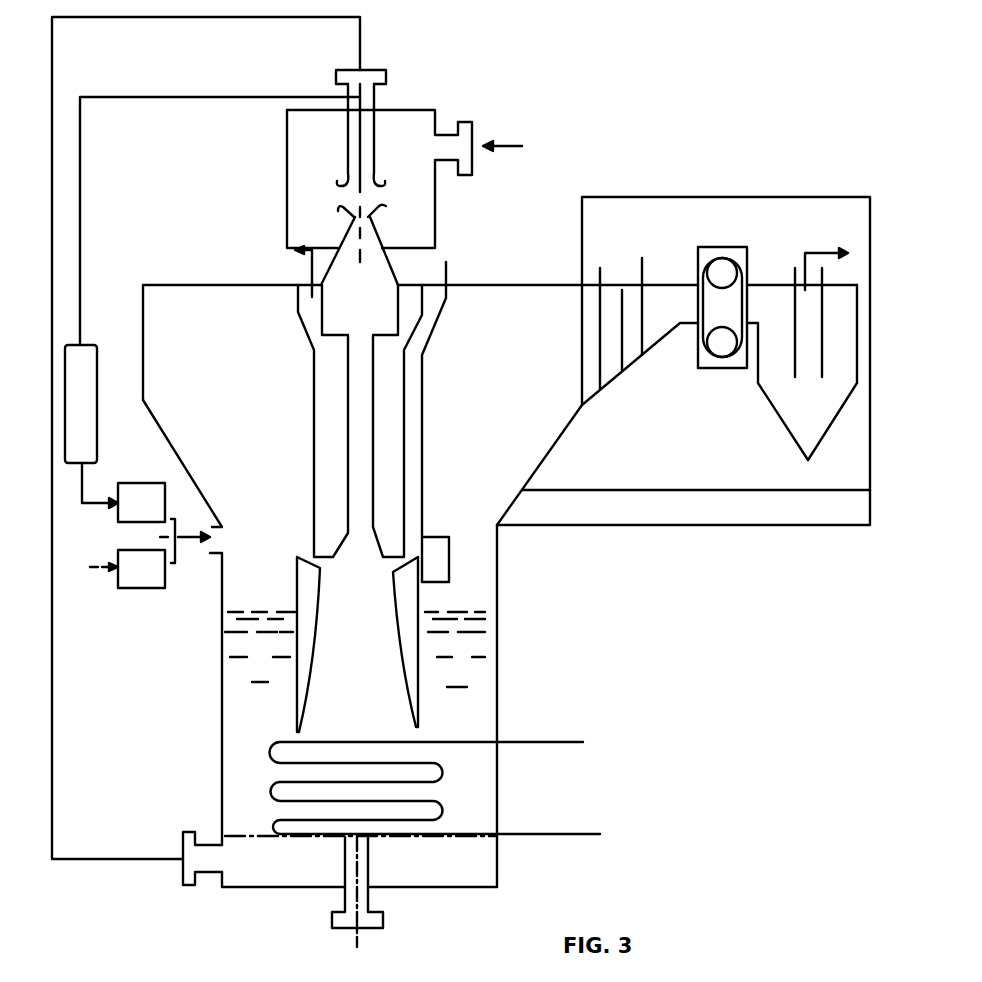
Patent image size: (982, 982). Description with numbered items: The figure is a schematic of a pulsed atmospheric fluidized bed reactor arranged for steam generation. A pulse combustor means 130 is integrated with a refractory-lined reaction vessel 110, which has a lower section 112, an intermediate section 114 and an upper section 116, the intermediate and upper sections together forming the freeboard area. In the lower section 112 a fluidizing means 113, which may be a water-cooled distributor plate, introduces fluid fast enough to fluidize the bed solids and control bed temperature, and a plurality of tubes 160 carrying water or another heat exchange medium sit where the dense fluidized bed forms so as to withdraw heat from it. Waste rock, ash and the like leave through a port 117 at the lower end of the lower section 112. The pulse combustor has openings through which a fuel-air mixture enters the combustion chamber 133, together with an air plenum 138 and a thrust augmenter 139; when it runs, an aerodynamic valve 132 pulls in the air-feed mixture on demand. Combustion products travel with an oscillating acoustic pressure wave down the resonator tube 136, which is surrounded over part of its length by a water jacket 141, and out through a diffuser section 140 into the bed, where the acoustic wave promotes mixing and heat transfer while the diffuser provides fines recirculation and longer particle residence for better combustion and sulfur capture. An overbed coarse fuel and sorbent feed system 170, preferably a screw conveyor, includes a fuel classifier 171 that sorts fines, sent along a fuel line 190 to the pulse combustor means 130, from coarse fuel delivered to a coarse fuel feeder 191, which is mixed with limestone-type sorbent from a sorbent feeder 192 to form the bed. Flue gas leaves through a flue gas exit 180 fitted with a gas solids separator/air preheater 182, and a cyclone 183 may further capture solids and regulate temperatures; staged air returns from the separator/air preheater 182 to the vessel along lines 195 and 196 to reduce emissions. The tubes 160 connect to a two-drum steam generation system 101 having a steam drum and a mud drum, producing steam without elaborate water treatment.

The two-drum steam generation system 101 is at (725, 368).
The reaction vessel 110 is at (497, 643).
The lower section 112 is at (222, 740).
The fluidizing means 113 is at (462, 842).
The intermediate section 114 is at (497, 530).
The upper section 116 is at (556, 445).
The port 117 is at (383, 900).
The pulse combustor means 130 is at (450, 255).
The aerodynamic valve 132 is at (386, 206).
The combustion chamber 133 is at (343, 270).
The resonator tube 136 is at (370, 495).
The air plenum 138 is at (404, 110).
The thrust augmenter 139 is at (350, 183).
The diffuser section 140 is at (410, 622).
The water jacket 141 is at (393, 422).
The tubes 160 is at (473, 737).
The overbed coarse fuel and sorbent feed system 170 is at (100, 533).
The fuel classifier 171 is at (83, 407).
The flue gas exit 180 is at (667, 288).
The gas solids separator/air preheater 182 is at (600, 283).
The cyclone 183 is at (787, 430).
The fuel line 190 is at (80, 214).
The coarse fuel feeder 191 is at (147, 463).
The sorbent feeder 192 is at (137, 589).
The air staging line 195 is at (640, 488).
The air staging line 196 is at (692, 525).